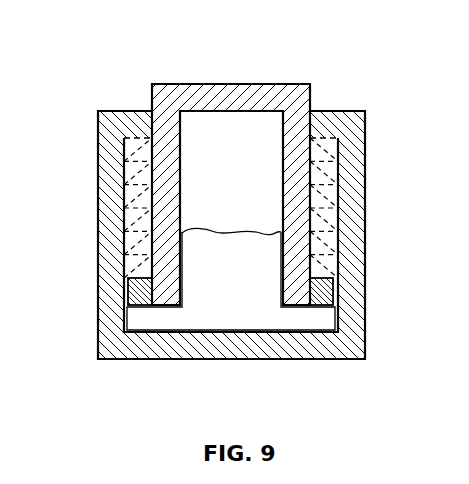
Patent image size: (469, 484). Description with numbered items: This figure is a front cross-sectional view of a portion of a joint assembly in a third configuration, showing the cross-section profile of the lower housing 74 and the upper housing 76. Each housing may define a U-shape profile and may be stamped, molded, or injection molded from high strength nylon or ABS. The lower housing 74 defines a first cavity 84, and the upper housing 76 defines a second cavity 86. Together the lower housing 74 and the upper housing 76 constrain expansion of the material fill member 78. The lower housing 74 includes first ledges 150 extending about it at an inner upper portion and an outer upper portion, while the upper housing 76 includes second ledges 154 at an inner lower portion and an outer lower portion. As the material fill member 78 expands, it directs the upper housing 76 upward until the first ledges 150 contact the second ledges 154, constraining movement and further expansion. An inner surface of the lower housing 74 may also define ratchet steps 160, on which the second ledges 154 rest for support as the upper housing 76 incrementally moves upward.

The lower housing 74 is at (366, 218).
The upper housing 76 is at (268, 93).
The material fill member 78 is at (164, 318).
The first cavity 84 is at (324, 159).
The second cavity 86 is at (253, 152).
The first ledges 150 is at (125, 117).
The second ledges 154 is at (150, 292).
The ratchet steps 160 is at (108, 196).